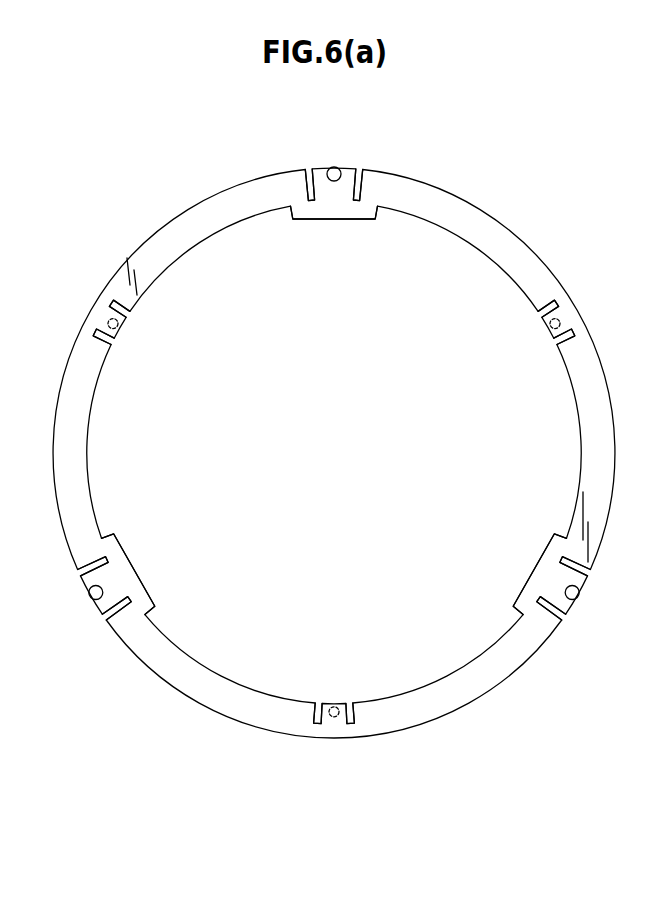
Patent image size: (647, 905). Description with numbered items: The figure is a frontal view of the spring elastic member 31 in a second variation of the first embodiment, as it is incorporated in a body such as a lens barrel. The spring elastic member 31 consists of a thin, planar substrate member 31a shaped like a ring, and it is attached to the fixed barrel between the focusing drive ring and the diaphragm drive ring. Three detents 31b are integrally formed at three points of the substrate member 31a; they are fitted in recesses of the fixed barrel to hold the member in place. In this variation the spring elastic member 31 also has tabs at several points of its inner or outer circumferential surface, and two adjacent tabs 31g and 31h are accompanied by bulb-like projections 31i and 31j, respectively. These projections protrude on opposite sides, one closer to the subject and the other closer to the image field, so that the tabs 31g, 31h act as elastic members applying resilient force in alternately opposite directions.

The spring elastic member 31 is at (532, 222).
The substrate member 31a is at (216, 706).
The detent 31b is at (331, 219).
The tab 31g is at (351, 176).
The tab 31h is at (127, 313).
The bulb-like projection 31i is at (328, 169).
The bulb-like projection 31j is at (116, 328).